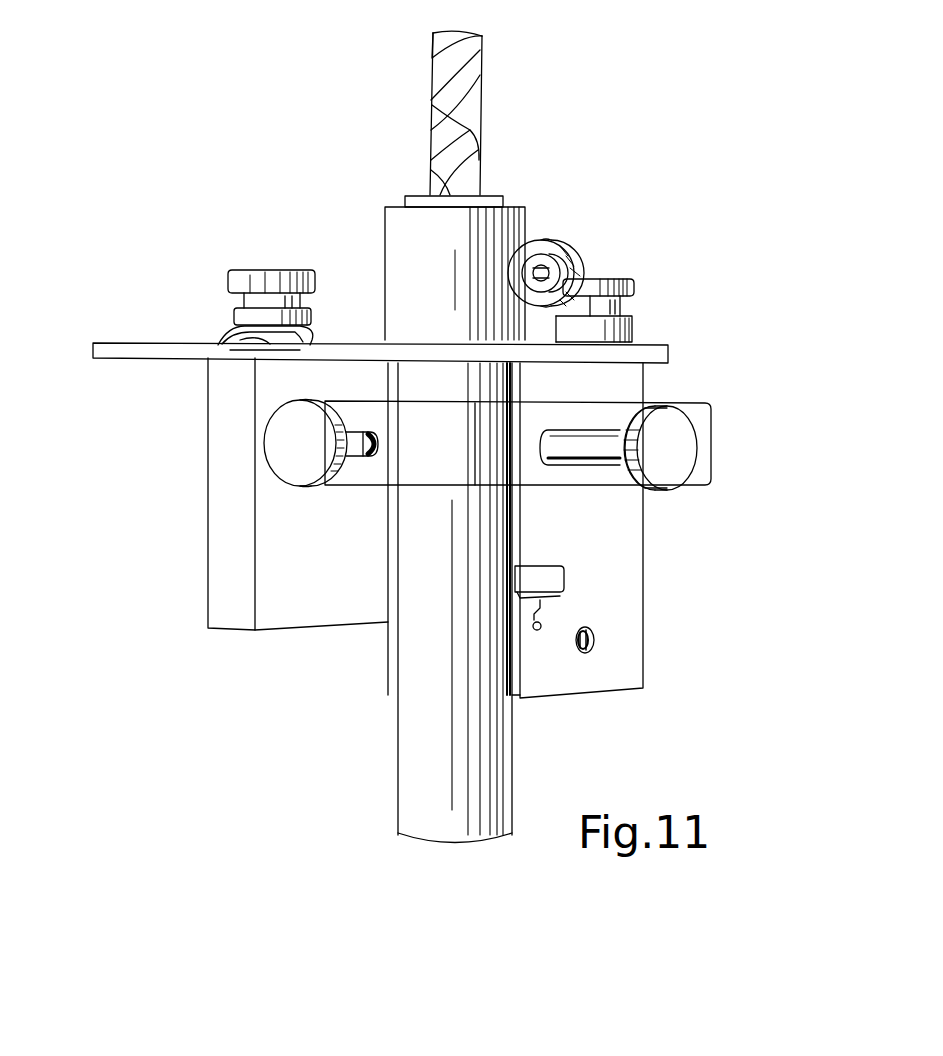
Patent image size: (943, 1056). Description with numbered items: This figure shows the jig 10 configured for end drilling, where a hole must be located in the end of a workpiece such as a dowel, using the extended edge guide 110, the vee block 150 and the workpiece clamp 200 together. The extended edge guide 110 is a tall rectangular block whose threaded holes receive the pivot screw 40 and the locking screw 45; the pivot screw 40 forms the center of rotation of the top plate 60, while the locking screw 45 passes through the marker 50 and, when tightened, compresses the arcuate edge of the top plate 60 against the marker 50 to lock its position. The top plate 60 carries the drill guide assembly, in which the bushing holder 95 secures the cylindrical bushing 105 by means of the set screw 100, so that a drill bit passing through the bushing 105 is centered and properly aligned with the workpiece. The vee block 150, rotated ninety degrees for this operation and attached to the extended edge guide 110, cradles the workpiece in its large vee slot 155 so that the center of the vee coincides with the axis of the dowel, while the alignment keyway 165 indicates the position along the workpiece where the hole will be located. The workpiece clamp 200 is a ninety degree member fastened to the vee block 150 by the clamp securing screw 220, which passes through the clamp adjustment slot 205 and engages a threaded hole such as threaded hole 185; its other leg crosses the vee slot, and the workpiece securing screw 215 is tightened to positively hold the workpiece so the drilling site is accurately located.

The jig 10 is at (628, 168).
The bushing 105 is at (422, 197).
The bushing holder 95 is at (385, 226).
The set screw 100 is at (556, 248).
The pivot screw 40 is at (615, 276).
The locking screw 45 is at (256, 268).
The marker 50 is at (220, 337).
The top plate 60 is at (93, 352).
The extended edge guide 110 is at (208, 518).
The workpiece clamp 200 is at (700, 402).
The workpiece securing screw 215 is at (265, 436).
The clamp securing screw 220 is at (690, 438).
The clamp adjustment slot 205 is at (585, 462).
The alignment keyway 165 is at (545, 565).
The vee block 150 is at (643, 604).
The threaded hole 185 is at (594, 648).
The large vee slot 155 is at (514, 697).